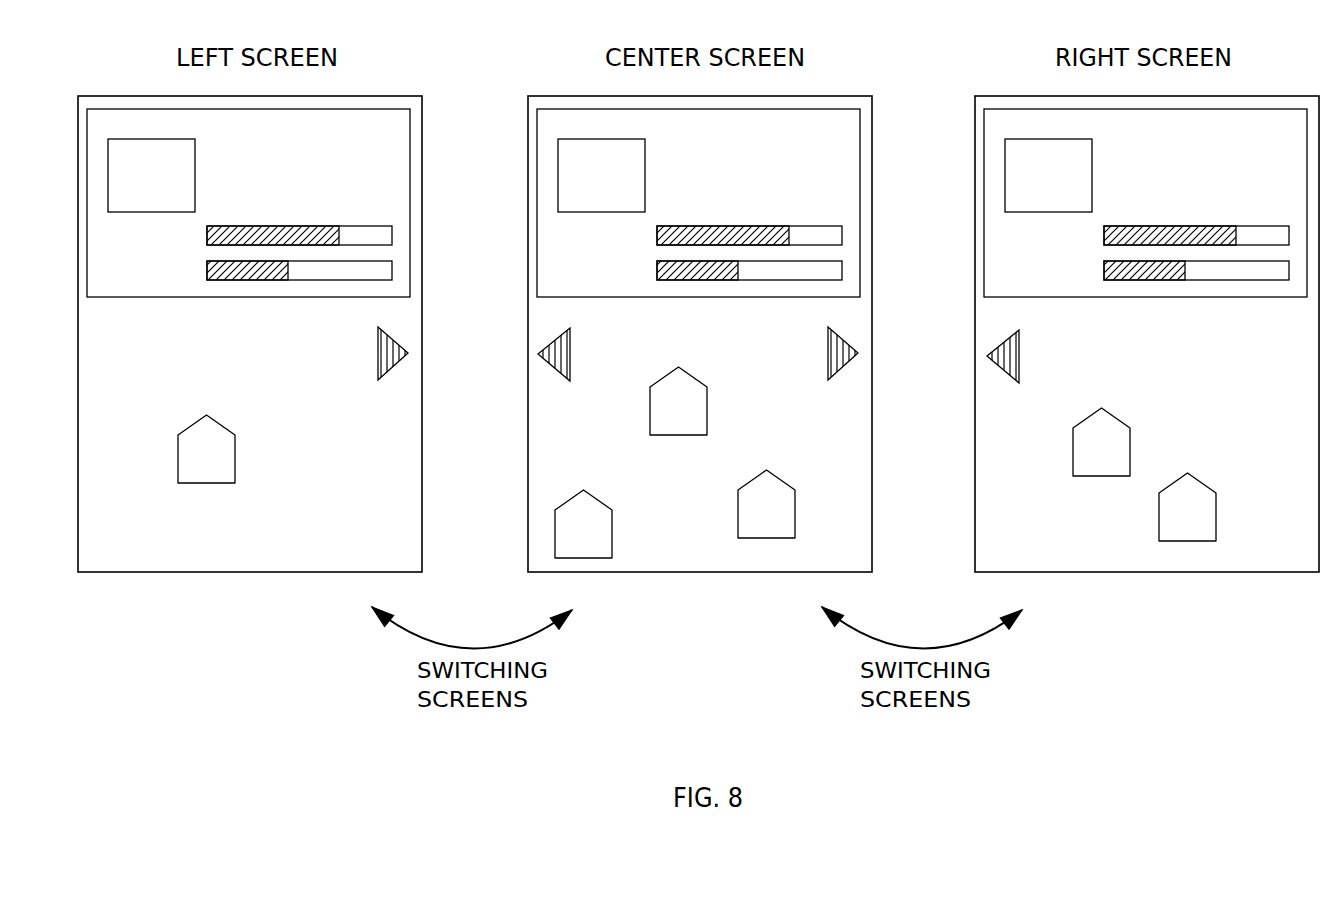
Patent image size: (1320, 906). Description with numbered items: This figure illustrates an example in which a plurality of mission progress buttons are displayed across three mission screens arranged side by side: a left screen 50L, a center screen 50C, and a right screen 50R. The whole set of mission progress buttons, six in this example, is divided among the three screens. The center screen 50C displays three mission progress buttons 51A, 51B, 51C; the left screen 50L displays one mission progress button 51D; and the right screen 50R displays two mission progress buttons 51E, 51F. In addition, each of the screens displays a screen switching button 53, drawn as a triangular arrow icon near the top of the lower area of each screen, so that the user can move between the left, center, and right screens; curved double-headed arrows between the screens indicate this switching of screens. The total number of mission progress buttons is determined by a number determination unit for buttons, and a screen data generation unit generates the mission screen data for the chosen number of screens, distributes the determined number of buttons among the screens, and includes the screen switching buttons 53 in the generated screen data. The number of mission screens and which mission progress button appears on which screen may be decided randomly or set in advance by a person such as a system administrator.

The left screen 50L is at (233, 572).
The center screen 50C is at (697, 572).
The right screen 50R is at (1152, 572).
The mission progress button 51A is at (597, 503).
The mission progress button 51B is at (693, 377).
The mission progress button 51C is at (780, 482).
The mission progress button 51D is at (222, 427).
The mission progress button 51E is at (1115, 418).
The mission progress button 51F is at (1200, 483).
The screen switching button 53 is at (377, 360).